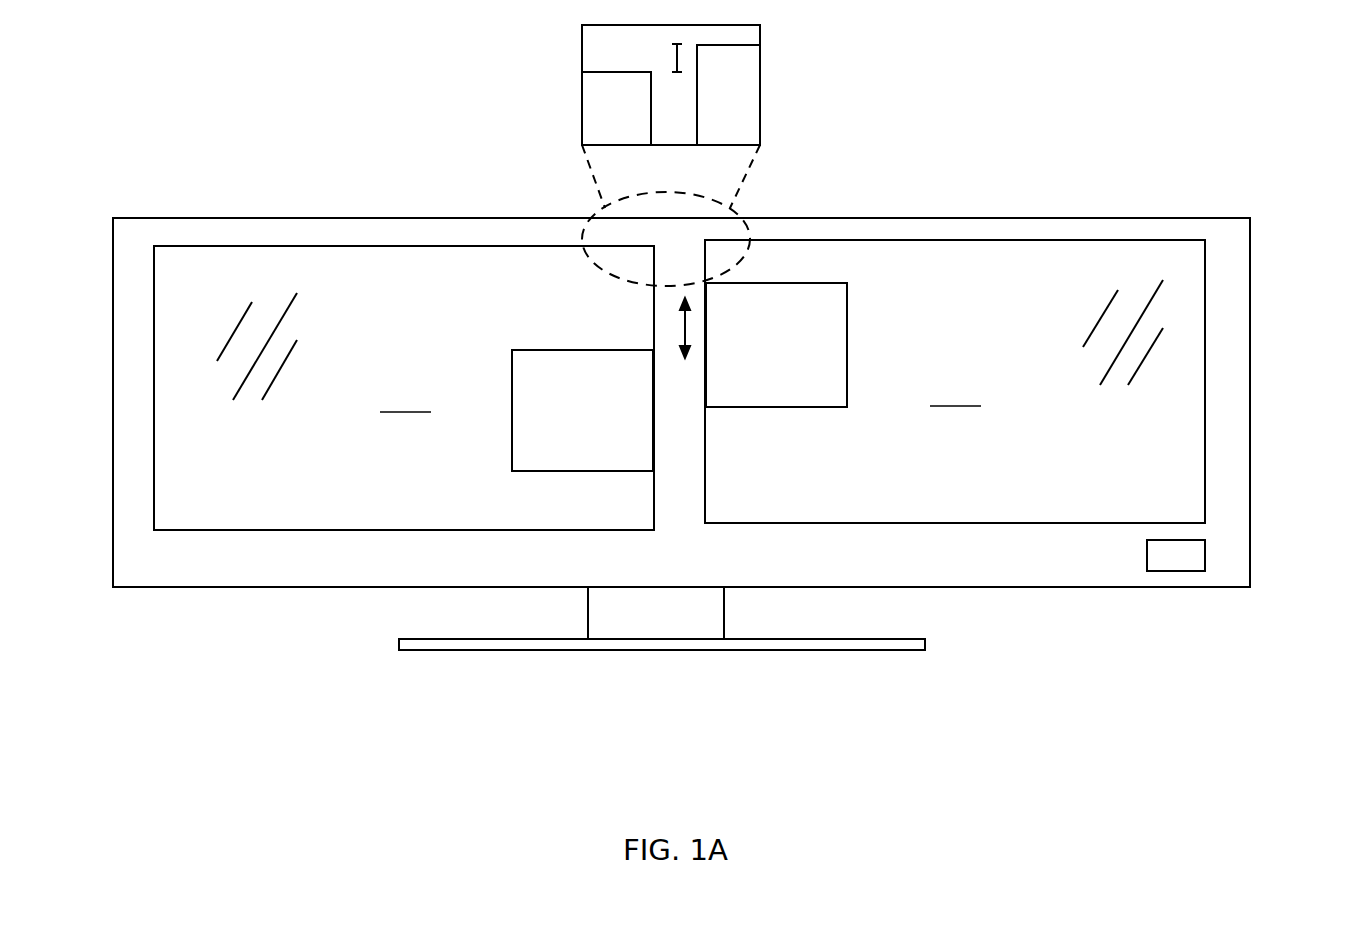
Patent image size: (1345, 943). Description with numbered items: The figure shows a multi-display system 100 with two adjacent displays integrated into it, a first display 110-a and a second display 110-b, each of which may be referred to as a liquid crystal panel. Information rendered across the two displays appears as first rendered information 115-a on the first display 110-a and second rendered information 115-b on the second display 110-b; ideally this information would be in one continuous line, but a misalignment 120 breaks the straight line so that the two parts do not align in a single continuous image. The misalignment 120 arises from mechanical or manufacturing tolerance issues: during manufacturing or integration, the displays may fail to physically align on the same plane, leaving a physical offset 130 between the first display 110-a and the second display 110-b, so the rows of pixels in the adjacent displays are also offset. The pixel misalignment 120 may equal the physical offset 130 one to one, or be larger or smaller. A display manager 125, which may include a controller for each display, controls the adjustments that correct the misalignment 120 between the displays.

The multi-display system 100 is at (1270, 84).
The first display 110-a is at (593, 103).
The second display 110-b is at (740, 83).
The first rendered information 115-a is at (565, 350).
The second rendered information 115-b is at (782, 407).
The misalignment 120 is at (680, 320).
The display manager 125 is at (1176, 555).
The physical offset 130 is at (673, 67).